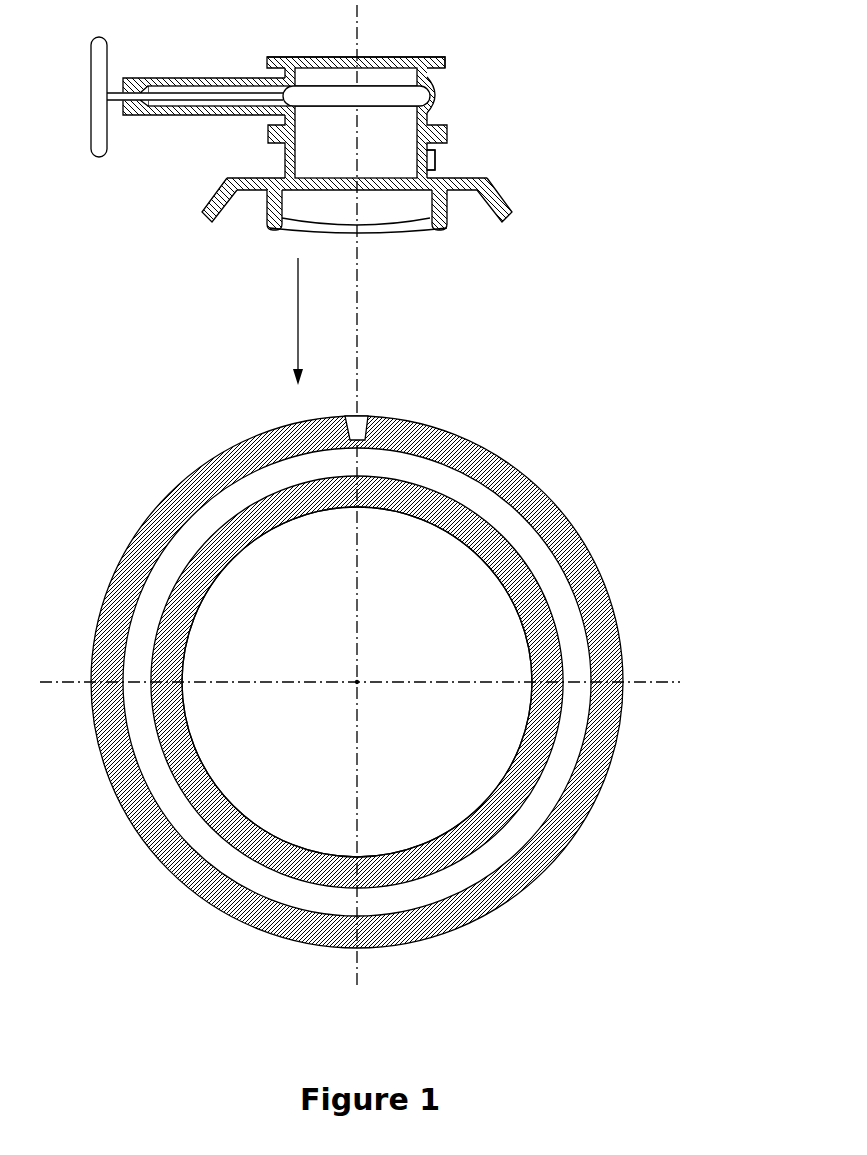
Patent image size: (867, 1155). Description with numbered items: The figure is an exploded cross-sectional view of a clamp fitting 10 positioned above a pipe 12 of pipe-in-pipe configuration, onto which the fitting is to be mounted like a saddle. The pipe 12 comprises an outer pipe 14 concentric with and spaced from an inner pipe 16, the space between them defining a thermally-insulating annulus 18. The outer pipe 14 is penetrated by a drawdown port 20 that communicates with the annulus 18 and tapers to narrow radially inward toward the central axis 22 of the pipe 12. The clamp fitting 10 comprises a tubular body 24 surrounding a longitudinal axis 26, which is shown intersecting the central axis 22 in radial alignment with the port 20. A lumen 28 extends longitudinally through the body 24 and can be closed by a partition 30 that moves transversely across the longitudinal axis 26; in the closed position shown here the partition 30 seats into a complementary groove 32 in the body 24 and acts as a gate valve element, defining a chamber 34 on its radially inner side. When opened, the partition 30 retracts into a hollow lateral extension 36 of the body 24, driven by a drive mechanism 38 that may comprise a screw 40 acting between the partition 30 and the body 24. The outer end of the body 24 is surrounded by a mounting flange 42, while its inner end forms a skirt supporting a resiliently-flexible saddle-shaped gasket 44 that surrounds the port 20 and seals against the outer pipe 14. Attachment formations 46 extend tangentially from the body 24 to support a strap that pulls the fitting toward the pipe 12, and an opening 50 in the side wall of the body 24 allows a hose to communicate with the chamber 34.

The clamp fitting 10 is at (307, 139).
The pipe 12 is at (332, 653).
The outer pipe 14 is at (532, 477).
The inner pipe 16 is at (250, 540).
The thermally-insulating annulus 18 is at (162, 598).
The port 20 is at (365, 415).
The central axis 22 is at (367, 673).
The tubular body 24 is at (288, 168).
The longitudinal axis 26 is at (362, 338).
The lumen 28 is at (332, 72).
The partition 30 is at (387, 93).
The groove 32 is at (437, 97).
The chamber 34 is at (356, 142).
The hollow lateral extension 36 is at (200, 78).
The drive mechanism 38 is at (97, 72).
The screw 40 is at (173, 98).
The mounting flange 42 is at (438, 57).
The gasket 44 is at (380, 220).
The attachment formations 46 is at (218, 200).
The opening 50 is at (418, 163).